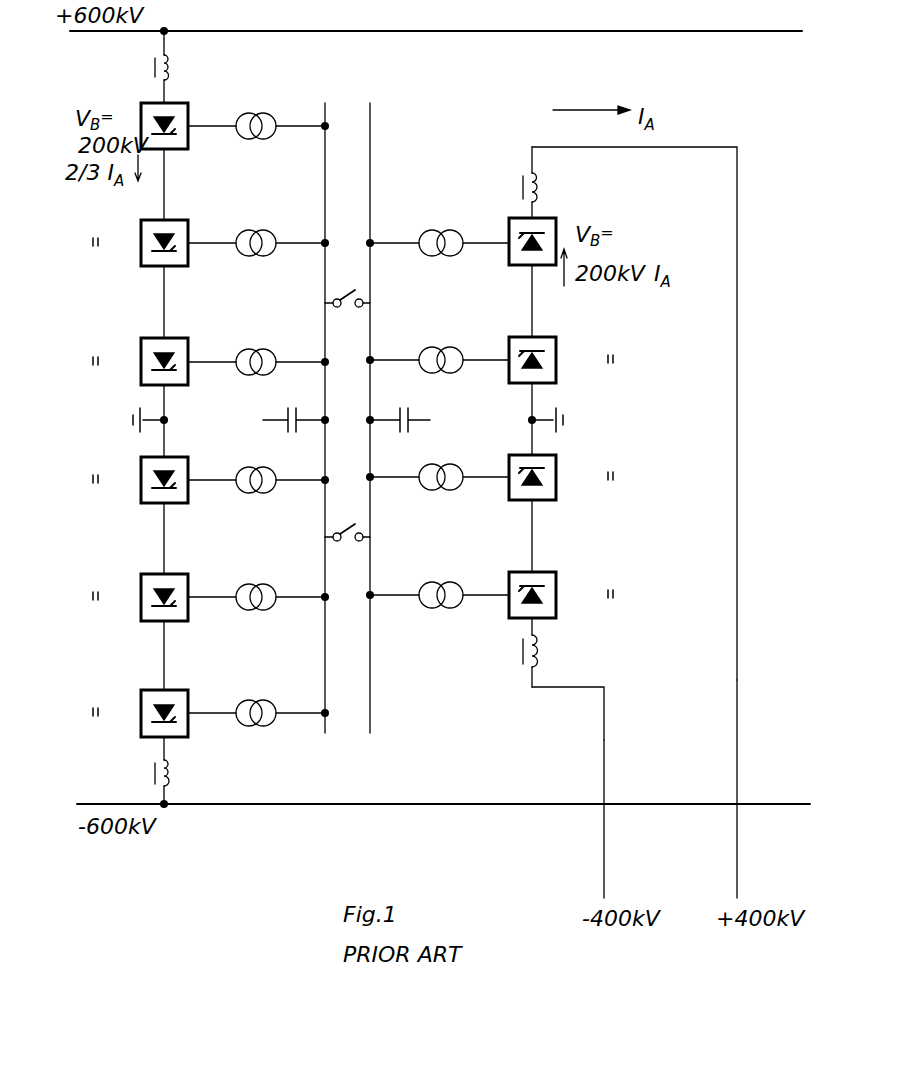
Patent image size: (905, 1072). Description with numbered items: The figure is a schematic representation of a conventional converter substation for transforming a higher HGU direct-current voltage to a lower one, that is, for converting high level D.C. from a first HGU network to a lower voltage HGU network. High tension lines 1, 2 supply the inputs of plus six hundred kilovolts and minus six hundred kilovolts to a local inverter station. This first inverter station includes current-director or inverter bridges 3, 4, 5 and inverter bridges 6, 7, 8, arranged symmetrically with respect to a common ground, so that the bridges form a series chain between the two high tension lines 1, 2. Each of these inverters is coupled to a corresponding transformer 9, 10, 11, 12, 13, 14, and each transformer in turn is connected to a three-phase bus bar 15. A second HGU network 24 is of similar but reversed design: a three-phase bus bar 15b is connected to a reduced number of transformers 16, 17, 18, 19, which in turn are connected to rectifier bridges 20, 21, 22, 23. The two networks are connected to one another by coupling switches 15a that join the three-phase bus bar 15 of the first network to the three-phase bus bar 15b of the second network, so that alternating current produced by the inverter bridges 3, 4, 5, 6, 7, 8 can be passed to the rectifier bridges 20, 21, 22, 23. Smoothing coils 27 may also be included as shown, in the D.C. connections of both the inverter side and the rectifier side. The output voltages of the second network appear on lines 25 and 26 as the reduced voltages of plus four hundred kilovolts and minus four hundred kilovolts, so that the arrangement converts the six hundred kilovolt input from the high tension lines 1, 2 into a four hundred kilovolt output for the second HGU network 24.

The high tension line 1 is at (197, 31).
The high tension line 2 is at (204, 806).
The inverter bridge 3 is at (188, 111).
The inverter bridge 4 is at (188, 228).
The inverter bridge 5 is at (188, 346).
The inverter bridge 6 is at (188, 465).
The inverter bridge 7 is at (188, 582).
The inverter bridge 8 is at (188, 698).
The transformer 9 is at (268, 114).
The transformer 10 is at (268, 231).
The transformer 11 is at (268, 350).
The transformer 12 is at (268, 468).
The transformer 13 is at (268, 585).
The transformer 14 is at (268, 701).
The three-phase bus bar 15 is at (324, 735).
The coupling switches 15a is at (356, 283).
The three-phase bus bar 15b is at (371, 735).
The transformer 16 is at (462, 222).
The transformer 17 is at (462, 339).
The transformer 18 is at (462, 456).
The transformer 19 is at (462, 574).
The rectifier bridge 20 is at (509, 257).
The rectifier bridge 21 is at (509, 375).
The rectifier bridge 22 is at (509, 492).
The rectifier bridge 23 is at (509, 610).
The second HGU network 24 is at (634, 443).
The output line 25 is at (605, 882).
The output line 26 is at (738, 882).
The smoothing coil 27 is at (184, 60).